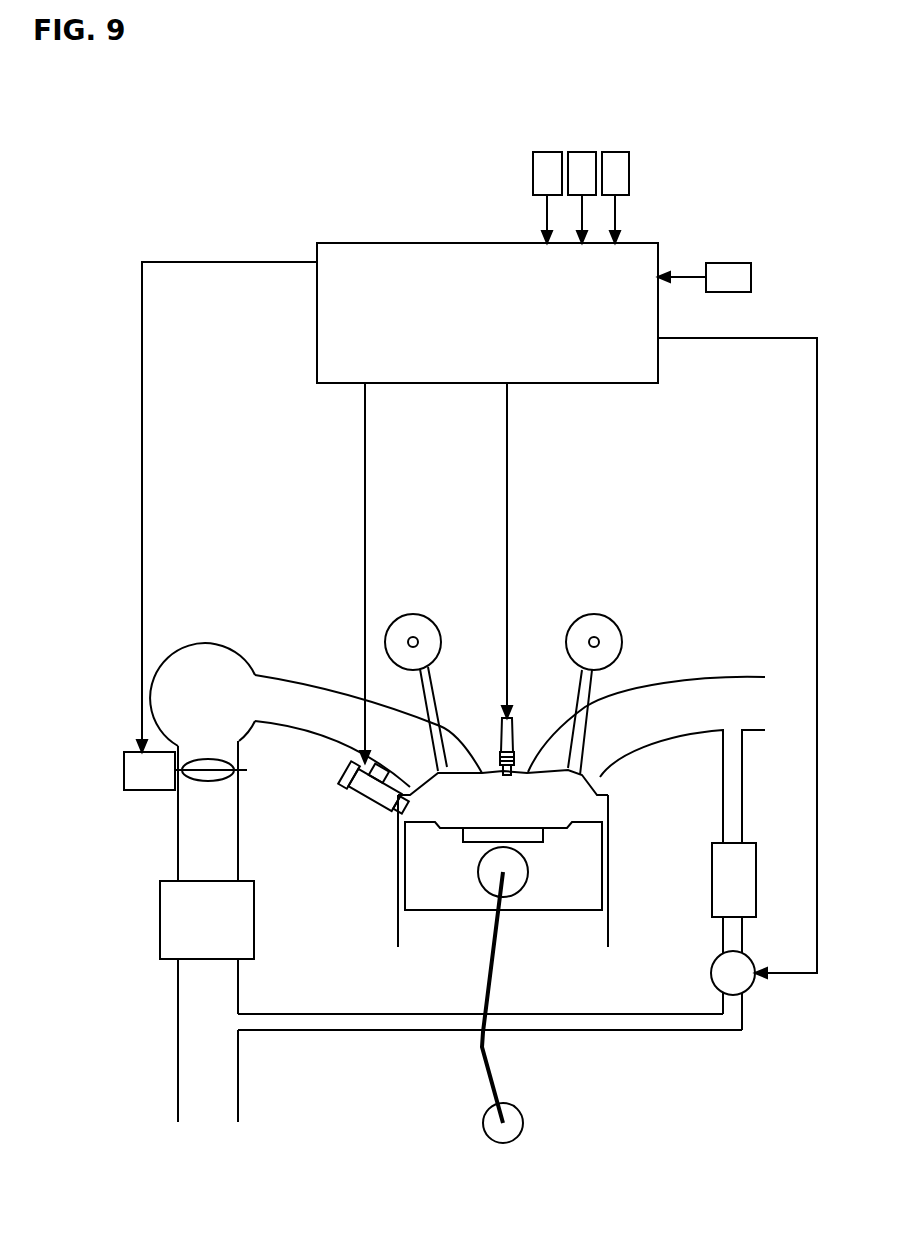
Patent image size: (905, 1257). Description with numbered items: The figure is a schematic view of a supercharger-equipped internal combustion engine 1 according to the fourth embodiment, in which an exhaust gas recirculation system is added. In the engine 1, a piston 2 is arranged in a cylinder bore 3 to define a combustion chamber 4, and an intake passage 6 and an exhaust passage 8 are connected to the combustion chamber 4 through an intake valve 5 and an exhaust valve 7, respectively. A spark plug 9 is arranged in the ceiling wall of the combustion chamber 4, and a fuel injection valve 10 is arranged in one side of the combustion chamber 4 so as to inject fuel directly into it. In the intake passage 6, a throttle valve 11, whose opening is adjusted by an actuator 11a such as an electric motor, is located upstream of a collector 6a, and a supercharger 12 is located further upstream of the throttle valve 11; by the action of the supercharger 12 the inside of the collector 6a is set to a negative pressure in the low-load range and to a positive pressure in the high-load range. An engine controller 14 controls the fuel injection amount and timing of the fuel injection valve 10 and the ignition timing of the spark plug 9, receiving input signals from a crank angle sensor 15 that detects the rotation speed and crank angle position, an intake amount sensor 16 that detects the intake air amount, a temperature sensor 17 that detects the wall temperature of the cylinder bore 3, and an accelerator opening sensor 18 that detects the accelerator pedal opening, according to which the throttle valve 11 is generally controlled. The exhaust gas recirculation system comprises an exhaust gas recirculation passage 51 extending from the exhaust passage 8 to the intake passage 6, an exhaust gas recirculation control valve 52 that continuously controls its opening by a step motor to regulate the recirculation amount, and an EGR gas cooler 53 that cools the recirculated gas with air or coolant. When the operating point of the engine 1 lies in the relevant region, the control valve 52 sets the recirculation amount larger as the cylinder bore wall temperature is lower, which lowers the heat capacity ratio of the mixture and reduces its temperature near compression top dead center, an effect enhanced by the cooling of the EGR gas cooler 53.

The internal combustion engine 1 is at (570, 763).
The piston 2 is at (598, 868).
The cylinder bore 3 is at (398, 937).
The combustion chamber 4 is at (600, 806).
The intake valve 5 is at (458, 775).
The intake passage 6 is at (298, 683).
The collector 6a is at (207, 652).
The exhaust valve 7 is at (600, 780).
The exhaust passage 8 is at (676, 690).
The spark plug 9 is at (510, 735).
The fuel injection valve 10 is at (365, 800).
The throttle valve 11 is at (222, 778).
The actuator 11a is at (136, 790).
The supercharger 12 is at (160, 921).
The engine controller 14 is at (405, 243).
The crank angle sensor 15 is at (545, 152).
The intake amount sensor 16 is at (583, 152).
The temperature sensor 17 is at (617, 152).
The accelerator opening sensor 18 is at (725, 263).
The exhaust gas recirculation passage 51 is at (626, 1030).
The exhaust gas recirculation control valve 52 is at (711, 973).
The EGR gas cooler 53 is at (712, 901).